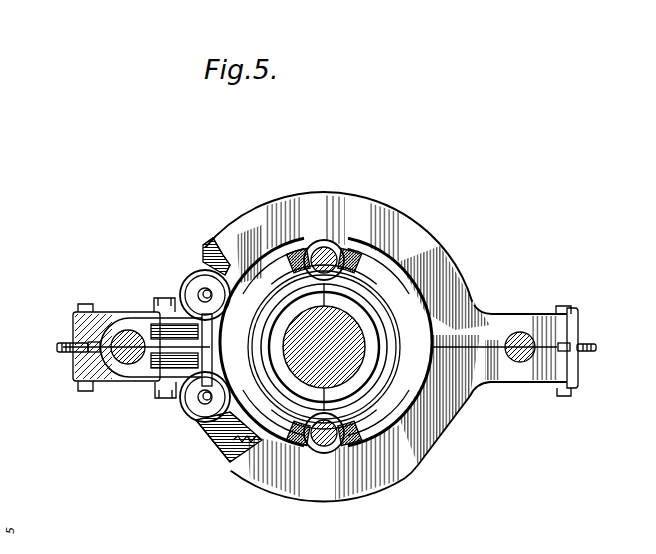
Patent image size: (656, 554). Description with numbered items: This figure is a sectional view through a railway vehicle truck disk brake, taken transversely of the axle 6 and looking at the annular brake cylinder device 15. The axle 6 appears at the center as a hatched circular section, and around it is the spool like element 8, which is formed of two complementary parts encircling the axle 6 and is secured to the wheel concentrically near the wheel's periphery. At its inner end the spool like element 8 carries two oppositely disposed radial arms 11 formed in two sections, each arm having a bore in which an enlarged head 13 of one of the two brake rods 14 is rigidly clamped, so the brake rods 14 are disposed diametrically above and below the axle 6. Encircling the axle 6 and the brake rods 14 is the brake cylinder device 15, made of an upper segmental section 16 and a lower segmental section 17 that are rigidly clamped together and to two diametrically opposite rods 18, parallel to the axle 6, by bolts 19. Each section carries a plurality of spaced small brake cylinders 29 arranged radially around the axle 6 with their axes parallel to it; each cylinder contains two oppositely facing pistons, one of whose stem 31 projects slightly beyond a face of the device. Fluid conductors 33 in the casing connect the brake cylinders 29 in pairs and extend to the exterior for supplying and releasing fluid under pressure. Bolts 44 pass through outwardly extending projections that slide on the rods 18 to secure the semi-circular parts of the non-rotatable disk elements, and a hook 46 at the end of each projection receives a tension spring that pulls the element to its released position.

The axle 6 is at (347, 352).
The spool like element 8 is at (383, 460).
The radial arms 11 is at (300, 250).
The enlarged heads 13 is at (345, 253).
The brake rods 14 is at (340, 256).
The annular brake cylinder device 15 is at (190, 299).
The upper segmental section 16 is at (208, 250).
The lower segmental section 17 is at (203, 437).
The rods 18 is at (126, 360).
The bolts 19 is at (162, 399).
The brake cylinders 29 is at (190, 287).
The piston stem 31 is at (218, 297).
The fluid conductors 33 is at (223, 456).
The bolts 44 is at (88, 304).
The hook 46 is at (60, 343).